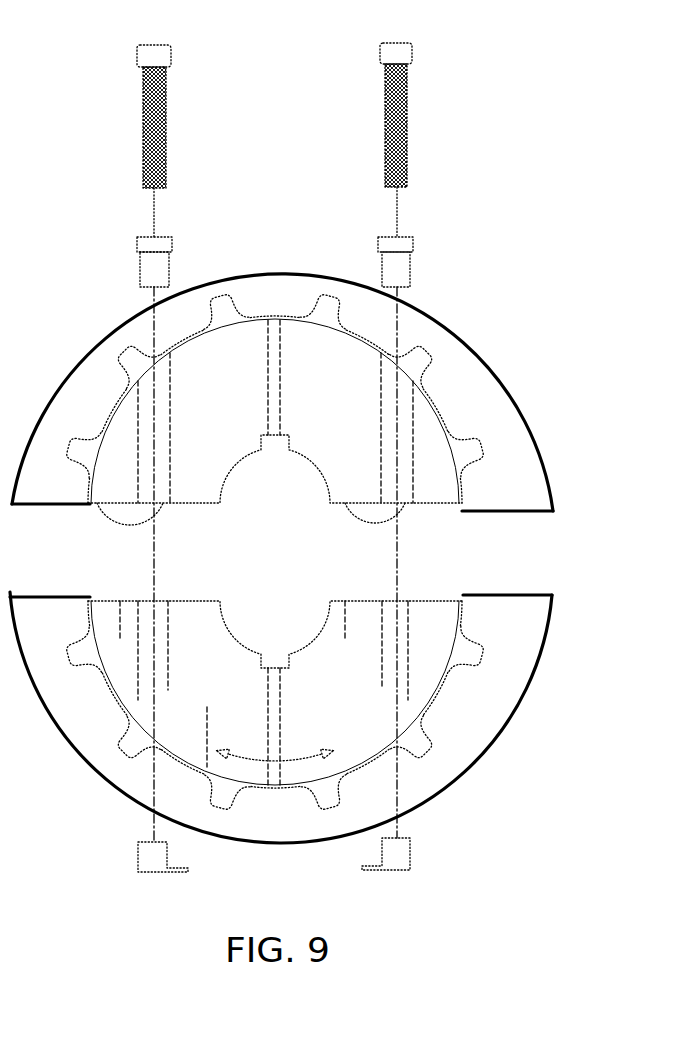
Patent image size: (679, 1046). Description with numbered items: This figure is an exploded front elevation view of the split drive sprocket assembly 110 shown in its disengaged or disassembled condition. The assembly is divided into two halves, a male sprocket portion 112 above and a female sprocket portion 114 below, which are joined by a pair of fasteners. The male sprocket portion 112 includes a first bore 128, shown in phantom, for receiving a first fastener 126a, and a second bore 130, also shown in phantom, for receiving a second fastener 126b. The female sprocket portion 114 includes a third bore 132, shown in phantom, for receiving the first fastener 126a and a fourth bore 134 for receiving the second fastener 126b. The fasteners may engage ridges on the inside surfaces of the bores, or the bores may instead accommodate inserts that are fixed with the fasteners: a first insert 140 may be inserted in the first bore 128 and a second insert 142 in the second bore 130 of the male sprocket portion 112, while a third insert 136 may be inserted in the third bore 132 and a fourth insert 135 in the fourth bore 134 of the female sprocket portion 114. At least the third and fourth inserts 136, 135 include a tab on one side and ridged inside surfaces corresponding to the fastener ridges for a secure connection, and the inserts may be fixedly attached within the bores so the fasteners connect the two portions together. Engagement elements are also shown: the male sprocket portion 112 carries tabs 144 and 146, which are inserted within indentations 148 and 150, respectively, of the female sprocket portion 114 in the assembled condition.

The split drive sprocket assembly 110 is at (585, 370).
The male sprocket portion 112 is at (120, 403).
The female sprocket portion 114 is at (107, 683).
The first fastener 126a is at (140, 118).
The second fastener 126b is at (408, 115).
The first bore 128 is at (135, 447).
The second bore 130 is at (413, 427).
The third bore 132 is at (137, 658).
The fourth bore 134 is at (410, 637).
The fourth insert 135 is at (412, 853).
The third insert 136 is at (137, 855).
The first insert 140 is at (172, 268).
The second insert 142 is at (410, 268).
The tab 144 is at (130, 527).
The tab 146 is at (403, 512).
The indentation 148 is at (133, 620).
The indentation 150 is at (352, 612).